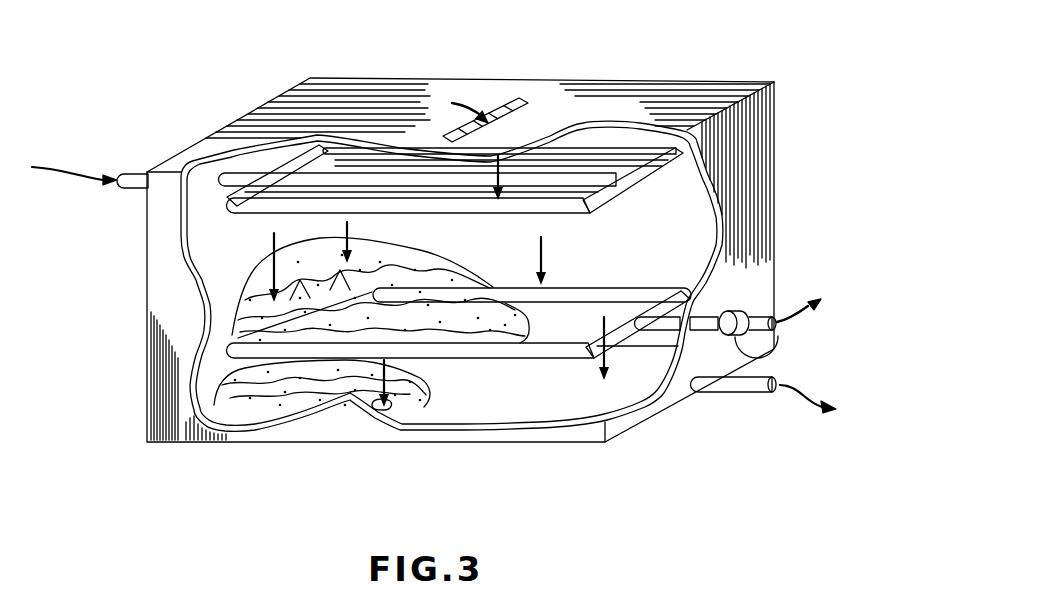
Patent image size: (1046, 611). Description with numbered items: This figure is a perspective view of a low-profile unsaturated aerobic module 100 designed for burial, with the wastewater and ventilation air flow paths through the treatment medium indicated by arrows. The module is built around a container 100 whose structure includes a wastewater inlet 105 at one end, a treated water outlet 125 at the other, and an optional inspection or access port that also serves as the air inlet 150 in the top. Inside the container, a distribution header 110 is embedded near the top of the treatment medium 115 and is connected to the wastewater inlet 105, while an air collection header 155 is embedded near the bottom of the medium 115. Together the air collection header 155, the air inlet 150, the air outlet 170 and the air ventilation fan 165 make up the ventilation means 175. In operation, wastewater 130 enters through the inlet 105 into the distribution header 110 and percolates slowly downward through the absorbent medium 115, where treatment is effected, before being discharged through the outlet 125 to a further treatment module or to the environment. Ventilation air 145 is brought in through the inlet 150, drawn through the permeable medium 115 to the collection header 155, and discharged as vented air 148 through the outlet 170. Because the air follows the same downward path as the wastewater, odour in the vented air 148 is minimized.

The aerobic module 100 is at (699, 92).
The wastewater inlet 105 is at (128, 173).
The distribution header 110 is at (288, 177).
The treatment medium 115 is at (220, 333).
The treated water outlet 125 is at (733, 390).
The wastewater 130 is at (76, 172).
The ventilation air 145 is at (472, 100).
The vented air 148 is at (802, 318).
The air inlet 150 is at (517, 100).
The air collection header 155 is at (517, 353).
The air ventilation fan 165 is at (776, 360).
The air outlet 170 is at (776, 343).
The ventilation means 175 is at (792, 280).